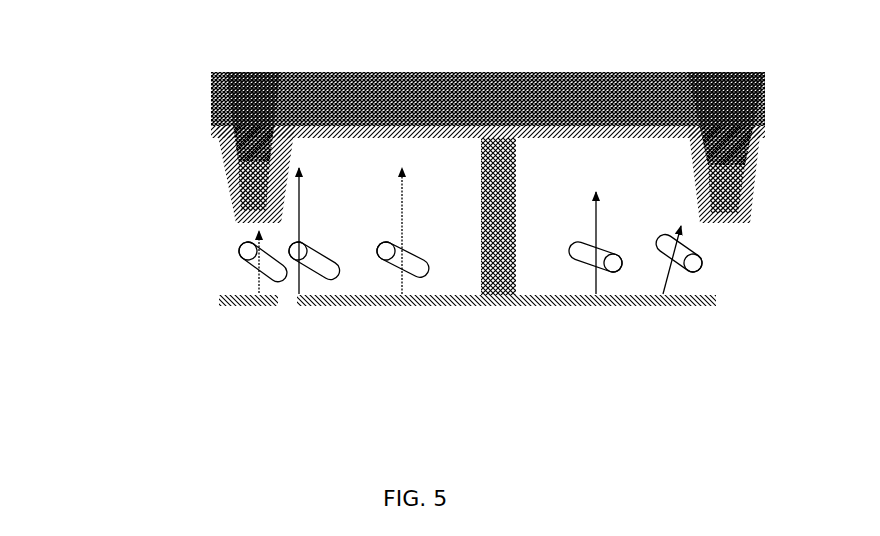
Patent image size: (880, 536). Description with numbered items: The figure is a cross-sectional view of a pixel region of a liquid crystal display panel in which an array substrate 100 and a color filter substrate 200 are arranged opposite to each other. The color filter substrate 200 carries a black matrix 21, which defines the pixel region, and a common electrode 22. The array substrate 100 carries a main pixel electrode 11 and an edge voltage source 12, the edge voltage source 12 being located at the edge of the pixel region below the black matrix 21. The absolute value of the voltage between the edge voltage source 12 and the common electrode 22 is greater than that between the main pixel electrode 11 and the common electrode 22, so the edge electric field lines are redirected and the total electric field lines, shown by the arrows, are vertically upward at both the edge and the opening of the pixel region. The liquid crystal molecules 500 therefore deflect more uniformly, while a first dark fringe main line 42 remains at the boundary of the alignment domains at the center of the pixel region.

The color filter substrate 200 is at (434, 139).
The black matrix 21 is at (215, 142).
The common electrode 22 is at (232, 213).
The array substrate 100 is at (394, 290).
The edge voltage source 12 is at (243, 293).
The main pixel electrode 11 is at (368, 293).
The first dark fringe main line 42 is at (512, 290).
The liquid crystal molecules 500 is at (608, 260).